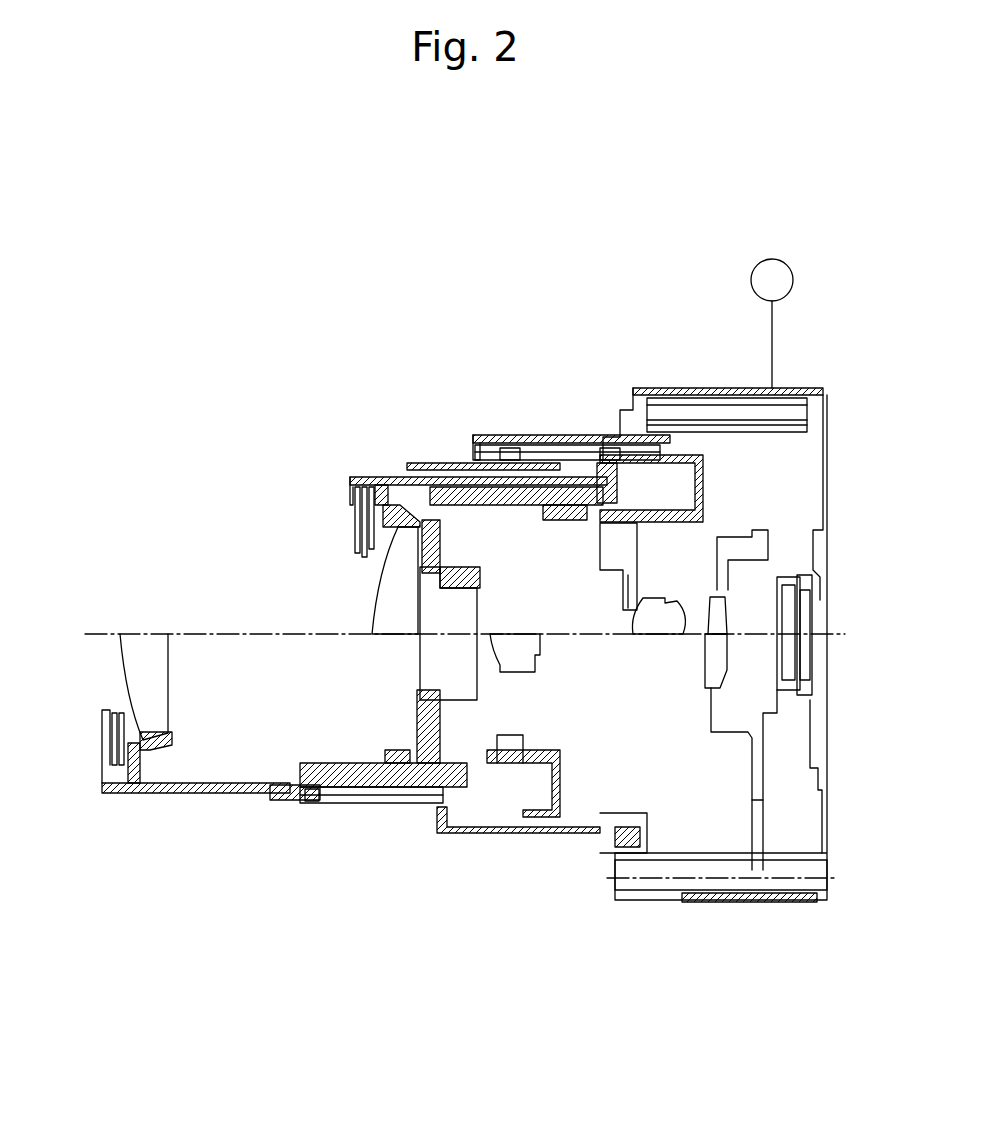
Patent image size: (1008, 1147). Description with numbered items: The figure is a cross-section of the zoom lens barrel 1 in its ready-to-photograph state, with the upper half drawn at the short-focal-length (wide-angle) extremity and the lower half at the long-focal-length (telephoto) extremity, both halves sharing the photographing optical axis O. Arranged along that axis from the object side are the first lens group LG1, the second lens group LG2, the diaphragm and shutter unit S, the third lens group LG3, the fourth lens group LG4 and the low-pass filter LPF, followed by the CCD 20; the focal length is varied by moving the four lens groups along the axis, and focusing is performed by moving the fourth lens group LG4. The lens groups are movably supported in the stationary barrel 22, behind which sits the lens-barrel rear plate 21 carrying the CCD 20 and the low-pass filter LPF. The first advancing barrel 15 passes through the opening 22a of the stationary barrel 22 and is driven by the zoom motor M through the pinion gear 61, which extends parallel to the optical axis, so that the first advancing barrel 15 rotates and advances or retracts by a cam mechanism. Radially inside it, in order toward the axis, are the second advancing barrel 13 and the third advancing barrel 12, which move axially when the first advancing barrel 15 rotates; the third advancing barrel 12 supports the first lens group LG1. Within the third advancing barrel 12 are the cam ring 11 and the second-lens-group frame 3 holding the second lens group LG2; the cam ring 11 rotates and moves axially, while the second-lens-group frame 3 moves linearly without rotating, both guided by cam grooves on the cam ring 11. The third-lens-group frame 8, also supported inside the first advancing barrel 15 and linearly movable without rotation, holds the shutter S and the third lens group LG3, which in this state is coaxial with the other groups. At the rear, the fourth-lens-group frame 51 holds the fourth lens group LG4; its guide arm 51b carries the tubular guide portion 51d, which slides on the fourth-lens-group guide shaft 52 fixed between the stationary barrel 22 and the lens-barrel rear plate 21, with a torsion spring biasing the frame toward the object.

The zoom lens barrel 1 is at (442, 327).
The second-lens-group frame 3 is at (493, 507).
The third-lens-group frame 8 is at (703, 503).
The cam ring 11 is at (463, 478).
The third advancing barrel 12 is at (385, 478).
The second advancing barrel 13 is at (435, 463).
The first advancing barrel 15 is at (542, 437).
The CCD 20 is at (808, 647).
The lens-barrel rear plate 21 is at (818, 733).
The stationary barrel 22 is at (693, 388).
The opening 22a is at (603, 437).
The fourth-lens-group frame 51 is at (723, 750).
The guide arm 51b is at (757, 805).
The tubular guide portion 51d is at (738, 893).
The fourth-lens-group guide shaft 52 is at (668, 882).
The pinion gear 61 is at (792, 403).
The first lens group LG1 is at (380, 597).
The second lens group LG2 is at (463, 647).
The third lens group LG3 is at (523, 652).
The fourth lens group LG4 is at (710, 613).
The low-pass filter LPF is at (790, 650).
The diaphragm and shutter unit S is at (628, 552).
The photographing optical axis O is at (454, 635).
The zoom motor M is at (772, 323).